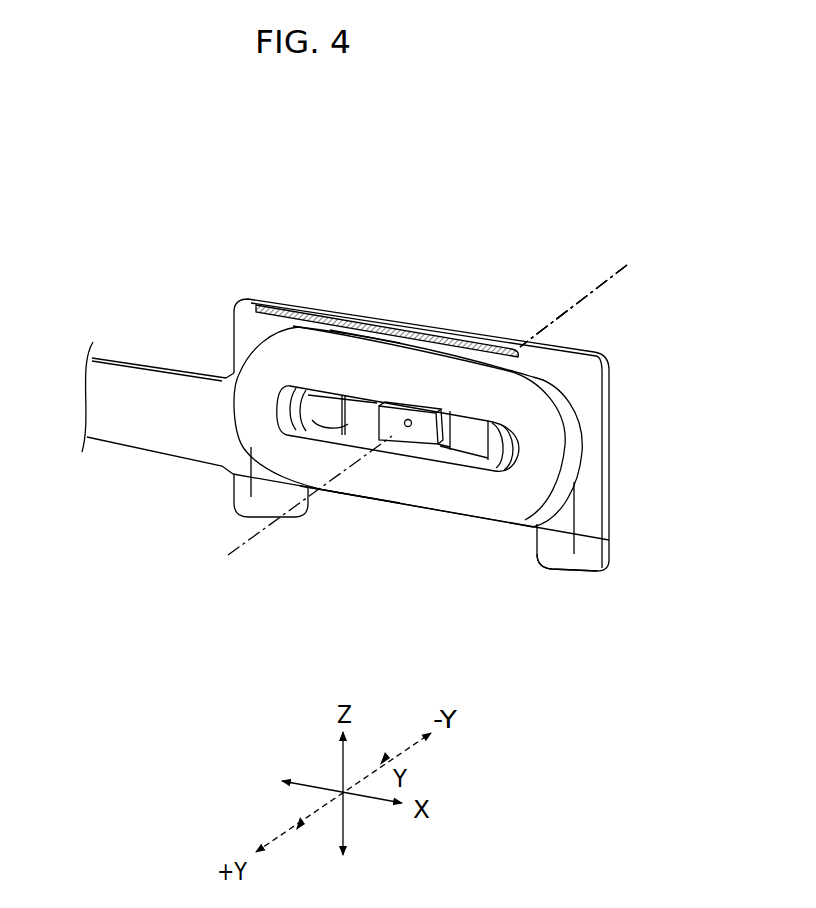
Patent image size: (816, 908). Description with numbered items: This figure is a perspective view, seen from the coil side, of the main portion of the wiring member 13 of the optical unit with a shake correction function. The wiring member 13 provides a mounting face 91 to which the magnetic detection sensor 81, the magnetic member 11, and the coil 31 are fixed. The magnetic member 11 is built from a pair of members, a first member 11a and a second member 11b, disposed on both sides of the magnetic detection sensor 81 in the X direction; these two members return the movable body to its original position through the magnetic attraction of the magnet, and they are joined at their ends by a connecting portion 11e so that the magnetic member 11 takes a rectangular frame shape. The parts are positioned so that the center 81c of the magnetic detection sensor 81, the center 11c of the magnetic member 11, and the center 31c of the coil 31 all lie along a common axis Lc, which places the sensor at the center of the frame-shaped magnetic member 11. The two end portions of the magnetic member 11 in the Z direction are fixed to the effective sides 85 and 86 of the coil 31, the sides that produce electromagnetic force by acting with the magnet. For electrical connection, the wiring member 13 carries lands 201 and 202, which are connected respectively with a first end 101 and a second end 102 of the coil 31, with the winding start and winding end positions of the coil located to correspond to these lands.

The wiring member 13 is at (163, 238).
The mounting face 91 is at (248, 266).
The magnetic member 11 is at (474, 452).
The first member 11a is at (357, 423).
The second member 11b is at (456, 446).
The center of the magnetic member 11c is at (573, 306).
The connecting portion 11e is at (416, 334).
The coil 31 is at (507, 508).
The center of the coil 31c is at (573, 306).
The magnetic detection sensor 81 is at (419, 434).
The center of the magnetic detection sensor 81c is at (606, 280).
The effective side 85 is at (366, 338).
The effective side 86 is at (353, 500).
The first end 101 is at (243, 477).
The second end 102 is at (576, 544).
The land 201 is at (243, 498).
The land 202 is at (578, 570).
The axis Lc is at (256, 550).